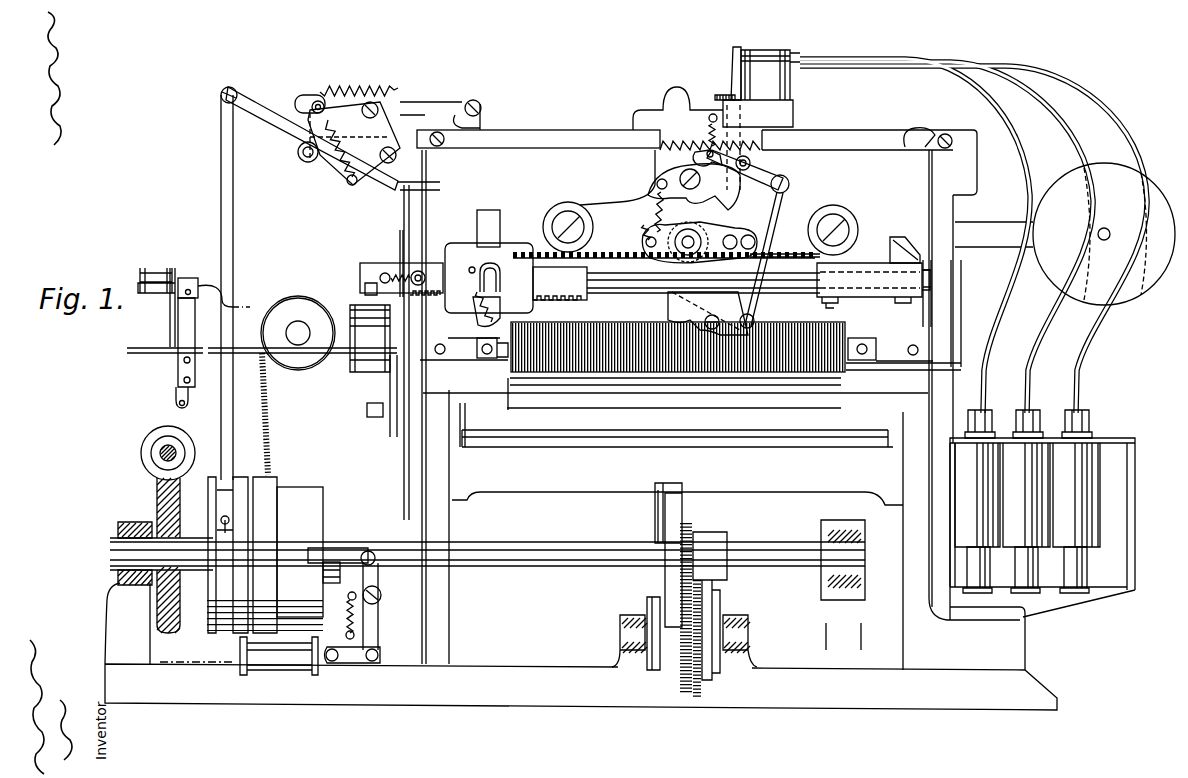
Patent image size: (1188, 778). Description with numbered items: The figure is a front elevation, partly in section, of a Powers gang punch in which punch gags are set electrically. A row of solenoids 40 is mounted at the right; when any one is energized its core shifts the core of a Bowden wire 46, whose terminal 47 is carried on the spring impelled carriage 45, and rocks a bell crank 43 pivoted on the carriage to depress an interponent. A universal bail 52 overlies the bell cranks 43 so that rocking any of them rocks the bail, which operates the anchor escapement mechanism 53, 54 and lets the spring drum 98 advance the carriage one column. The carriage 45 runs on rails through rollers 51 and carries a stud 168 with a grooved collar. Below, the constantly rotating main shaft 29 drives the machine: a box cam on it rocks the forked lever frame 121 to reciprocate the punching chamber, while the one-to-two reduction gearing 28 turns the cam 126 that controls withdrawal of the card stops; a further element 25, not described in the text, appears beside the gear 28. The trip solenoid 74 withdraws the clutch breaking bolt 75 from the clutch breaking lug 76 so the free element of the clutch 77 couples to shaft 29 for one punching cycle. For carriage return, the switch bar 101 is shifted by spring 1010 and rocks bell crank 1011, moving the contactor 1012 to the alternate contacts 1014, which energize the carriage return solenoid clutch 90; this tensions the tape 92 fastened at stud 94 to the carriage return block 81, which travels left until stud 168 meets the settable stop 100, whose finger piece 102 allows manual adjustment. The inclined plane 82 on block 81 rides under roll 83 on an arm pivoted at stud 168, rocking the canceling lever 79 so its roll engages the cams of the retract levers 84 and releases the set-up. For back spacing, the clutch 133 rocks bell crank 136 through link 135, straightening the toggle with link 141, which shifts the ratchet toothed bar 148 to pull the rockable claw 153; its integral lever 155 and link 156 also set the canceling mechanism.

The bell crank 136 is at (271, 124).
The link 141 is at (353, 118).
The contactor 1012 is at (203, 275).
The alternate contacts 1014 is at (180, 374).
The link 135 is at (236, 287).
The bell crank 1011 is at (343, 298).
The spring 1010 is at (377, 260).
The band or tape 92 is at (267, 417).
The back space solenoid clutch 133 is at (212, 607).
The main shaft 29 is at (568, 545).
The carriage return solenoid clutch 90 is at (270, 478).
The clutch 77 is at (305, 490).
The clutch breaking lug 76 is at (320, 548).
The clutch breaking and releasing bolt 75 is at (350, 550).
The trip solenoid 74 is at (283, 668).
The forked lever frame 121 is at (657, 513).
The hub 25 is at (750, 633).
The reduction gearing 28 is at (684, 700).
The cam 126 is at (698, 700).
The finger piece 102 is at (478, 230).
The carriage return stop 100 is at (489, 284).
The carriage return switch bar 101 is at (666, 277).
The carriage 45 is at (617, 195).
The rollers 51 is at (548, 218).
The anchor escapement mechanism 53 is at (656, 188).
The anchor escapement mechanism 54 is at (694, 187).
The rockable claw 153 is at (694, 162).
The lever 155 is at (772, 178).
The link 156 is at (764, 228).
The stud 168 is at (680, 252).
The roll 83 is at (646, 226).
The canceling lever 79 is at (678, 326).
The carriage return block 81 is at (762, 262).
The stud 94 is at (818, 306).
The inclined plane 82 is at (904, 238).
The retract levers 84 is at (840, 366).
The ratchet toothed bar 148 is at (668, 131).
The universal bail 52 is at (716, 96).
The bell crank 43 is at (733, 70).
The Bowden wire terminal 47 is at (760, 58).
The Bowden wire 46 is at (1026, 373).
The spring drum 98 is at (1070, 175).
The solenoids 40 is at (1042, 513).